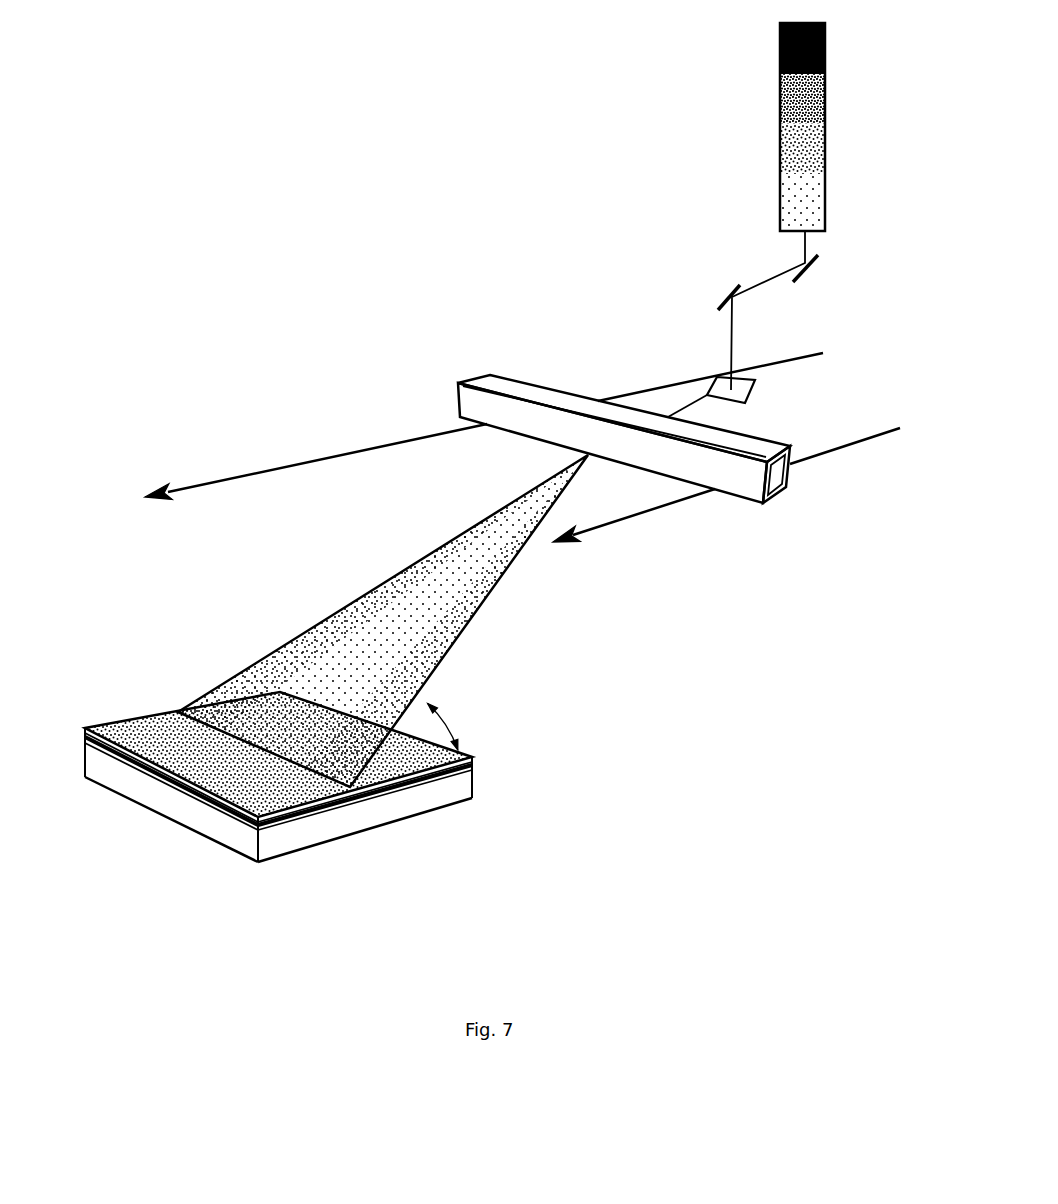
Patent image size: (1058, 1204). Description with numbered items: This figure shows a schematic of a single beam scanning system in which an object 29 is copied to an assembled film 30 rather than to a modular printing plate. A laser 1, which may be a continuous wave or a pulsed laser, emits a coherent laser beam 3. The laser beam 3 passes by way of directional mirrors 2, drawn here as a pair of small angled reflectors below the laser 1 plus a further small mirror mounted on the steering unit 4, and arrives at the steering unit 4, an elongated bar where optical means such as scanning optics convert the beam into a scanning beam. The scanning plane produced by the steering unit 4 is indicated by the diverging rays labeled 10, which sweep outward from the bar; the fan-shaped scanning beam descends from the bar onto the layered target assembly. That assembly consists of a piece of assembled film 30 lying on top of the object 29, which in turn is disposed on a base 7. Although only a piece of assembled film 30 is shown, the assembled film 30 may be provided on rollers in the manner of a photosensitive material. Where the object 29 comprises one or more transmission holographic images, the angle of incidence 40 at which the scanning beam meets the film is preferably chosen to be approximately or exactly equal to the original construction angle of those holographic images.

The laser 1 is at (770, 133).
The directional mirrors 2 is at (719, 289).
The laser beam 3 is at (717, 339).
The steering unit 4 is at (447, 375).
The scanning light beam plane 10 is at (359, 445).
The assembled film 30 is at (111, 709).
The object 29 is at (181, 801).
The base 7 is at (442, 805).
The angle of incidence 40 is at (446, 720).